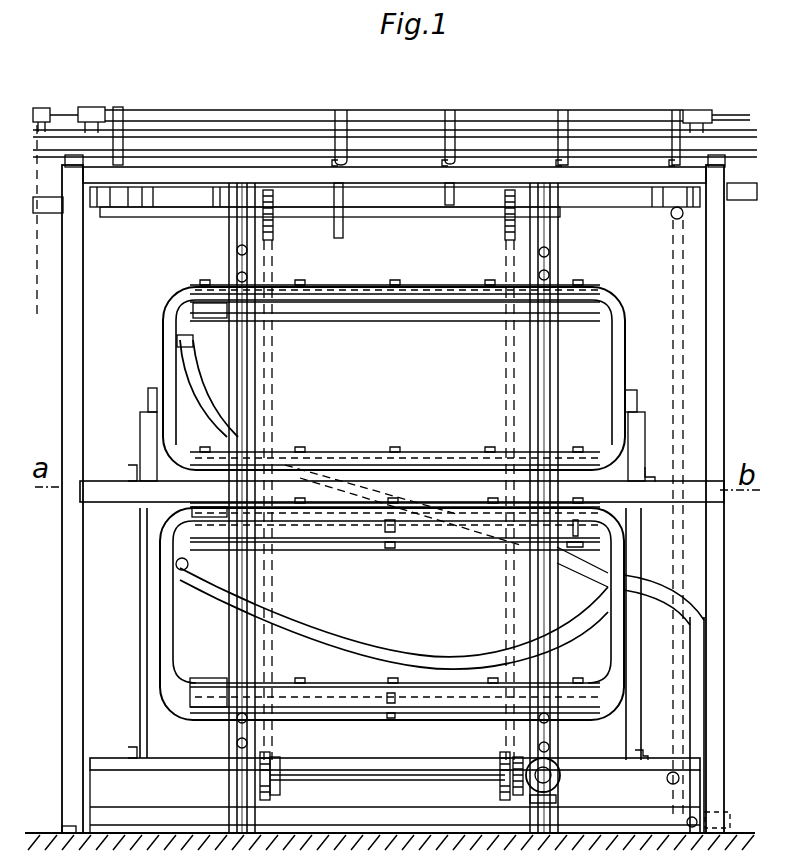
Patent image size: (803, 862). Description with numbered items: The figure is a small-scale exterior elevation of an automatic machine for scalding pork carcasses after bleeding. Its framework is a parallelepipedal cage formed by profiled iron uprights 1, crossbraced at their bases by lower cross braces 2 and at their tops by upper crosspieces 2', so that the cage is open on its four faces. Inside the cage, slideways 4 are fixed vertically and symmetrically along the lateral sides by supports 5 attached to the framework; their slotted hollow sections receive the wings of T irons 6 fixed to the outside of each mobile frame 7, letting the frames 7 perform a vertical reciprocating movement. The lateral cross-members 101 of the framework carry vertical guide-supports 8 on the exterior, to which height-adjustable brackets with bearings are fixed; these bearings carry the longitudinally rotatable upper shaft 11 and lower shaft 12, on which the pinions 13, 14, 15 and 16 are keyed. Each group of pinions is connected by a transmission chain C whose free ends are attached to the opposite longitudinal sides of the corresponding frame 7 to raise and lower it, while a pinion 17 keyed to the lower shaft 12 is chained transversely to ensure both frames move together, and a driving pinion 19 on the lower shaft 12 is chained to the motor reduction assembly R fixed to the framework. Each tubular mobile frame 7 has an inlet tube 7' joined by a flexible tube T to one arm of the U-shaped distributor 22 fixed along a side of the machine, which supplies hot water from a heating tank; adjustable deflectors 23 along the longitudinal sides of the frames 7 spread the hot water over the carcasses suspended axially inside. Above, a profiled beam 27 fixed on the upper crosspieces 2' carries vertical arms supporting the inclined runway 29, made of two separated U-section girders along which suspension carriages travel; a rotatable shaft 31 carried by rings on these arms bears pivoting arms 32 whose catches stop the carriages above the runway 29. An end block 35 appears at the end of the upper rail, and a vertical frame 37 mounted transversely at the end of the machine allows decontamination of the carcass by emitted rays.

The profiled iron upright 1 is at (80, 180).
The lower cross brace 2 is at (395, 778).
The upper crosspiece 2' is at (408, 105).
The slideway 4 is at (147, 512).
The support 5 is at (135, 470).
The T iron 6 is at (150, 387).
The mobile frame 7 is at (325, 390).
The inlet tube 7' is at (106, 443).
The vertical guide-support 8 is at (237, 175).
The upper shaft 11 is at (367, 218).
The lower shaft 12 is at (343, 777).
The pinion 13 is at (268, 192).
The pinion 14 is at (265, 762).
The pinion 15 is at (508, 192).
The pinion 16 is at (505, 777).
The pinion 17 is at (278, 773).
The driving pinion 19 is at (517, 780).
The distributor 22 is at (697, 658).
The adjustable deflector 23 is at (320, 453).
The profiled beam 27 is at (180, 140).
The inclined runway 29 is at (150, 197).
The rotatable shaft 31 is at (355, 113).
The pivoting arm 32 is at (449, 112).
The end stop block 35 is at (40, 107).
The vertical frame 37 is at (682, 322).
The lateral cross-member 101 is at (210, 180).
The transmission chain C is at (270, 390).
The flexible tube T is at (200, 378).
The motor reduction assembly R is at (550, 763).